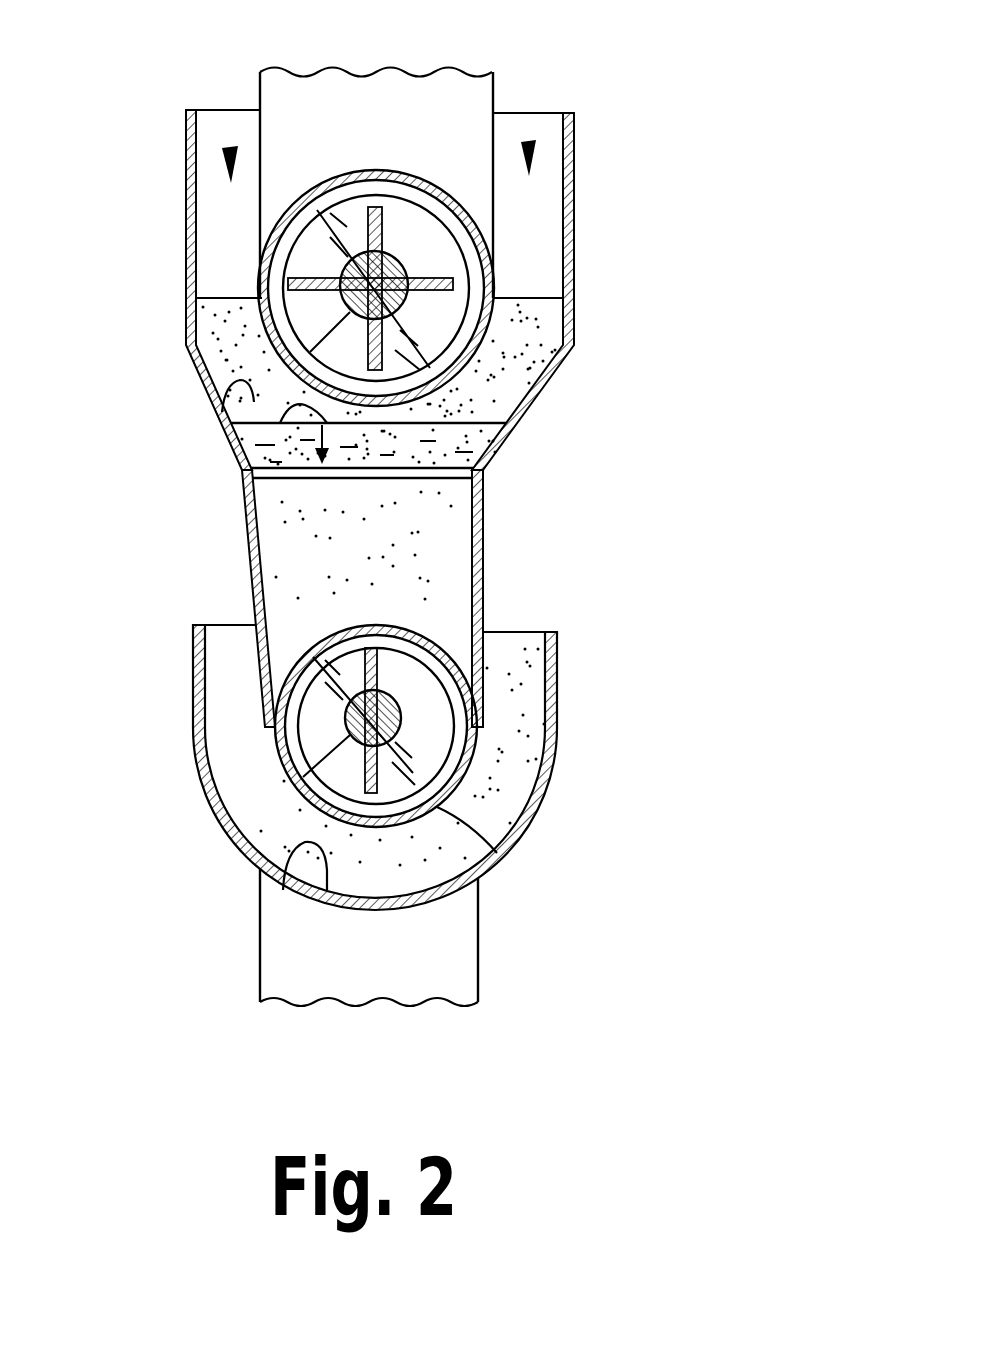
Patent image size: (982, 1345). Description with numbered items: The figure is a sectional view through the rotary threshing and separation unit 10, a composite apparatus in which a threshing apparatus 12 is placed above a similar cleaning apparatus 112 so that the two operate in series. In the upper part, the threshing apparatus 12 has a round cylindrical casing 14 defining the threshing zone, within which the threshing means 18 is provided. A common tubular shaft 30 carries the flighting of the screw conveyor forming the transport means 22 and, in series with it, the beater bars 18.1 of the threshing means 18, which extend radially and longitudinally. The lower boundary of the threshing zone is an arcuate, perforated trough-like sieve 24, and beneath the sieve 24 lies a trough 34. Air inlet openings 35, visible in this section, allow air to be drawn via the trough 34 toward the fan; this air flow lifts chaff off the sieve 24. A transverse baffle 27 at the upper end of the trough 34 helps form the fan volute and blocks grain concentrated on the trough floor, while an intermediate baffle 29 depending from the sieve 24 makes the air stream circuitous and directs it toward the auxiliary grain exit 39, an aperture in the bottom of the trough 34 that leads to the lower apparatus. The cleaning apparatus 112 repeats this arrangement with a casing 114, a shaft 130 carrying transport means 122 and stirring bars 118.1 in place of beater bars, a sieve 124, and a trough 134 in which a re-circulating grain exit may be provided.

The rotary threshing and separation unit 10 is at (725, 112).
The threshing apparatus 12 is at (600, 233).
The casing 14 is at (383, 173).
The threshing means 18 is at (410, 187).
The beater bars 18.1 is at (380, 234).
The transport means 22 is at (280, 230).
The sieve 24 is at (562, 352).
The transverse baffle 27 is at (520, 433).
The intermediate baffle 29 is at (223, 331).
The shaft 30 is at (400, 258).
The trough 34 is at (223, 392).
The air inlet openings 35 is at (528, 155).
The auxiliary grain exit 39 is at (237, 463).
The cleaning apparatus 112 is at (573, 743).
The casing 114 is at (437, 653).
The stirring bars 118.1 is at (377, 677).
The transport means 122 is at (255, 645).
The sieve 124 is at (490, 853).
The shaft 130 is at (347, 717).
The trough 134 is at (260, 877).